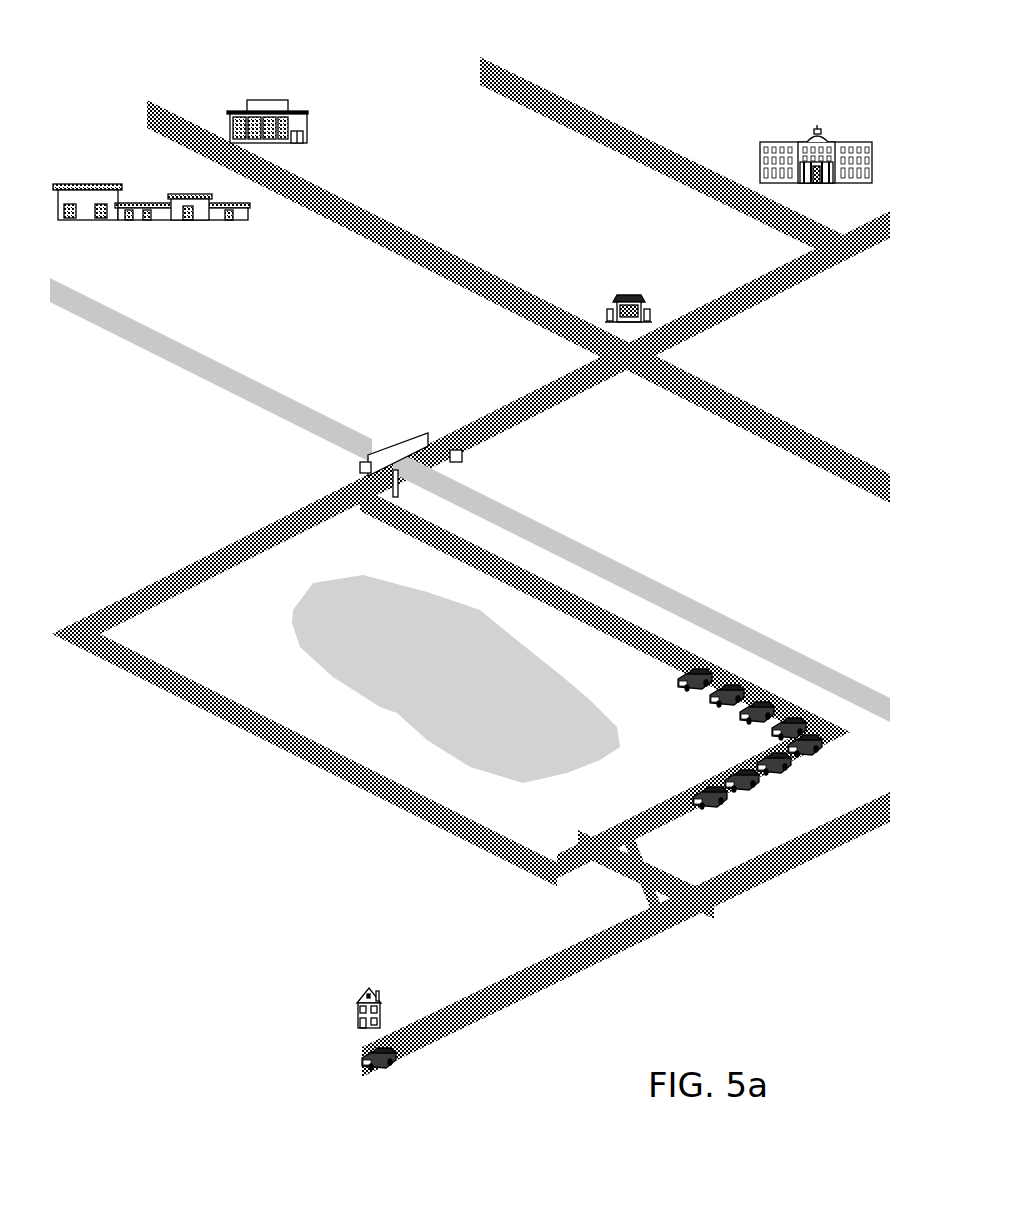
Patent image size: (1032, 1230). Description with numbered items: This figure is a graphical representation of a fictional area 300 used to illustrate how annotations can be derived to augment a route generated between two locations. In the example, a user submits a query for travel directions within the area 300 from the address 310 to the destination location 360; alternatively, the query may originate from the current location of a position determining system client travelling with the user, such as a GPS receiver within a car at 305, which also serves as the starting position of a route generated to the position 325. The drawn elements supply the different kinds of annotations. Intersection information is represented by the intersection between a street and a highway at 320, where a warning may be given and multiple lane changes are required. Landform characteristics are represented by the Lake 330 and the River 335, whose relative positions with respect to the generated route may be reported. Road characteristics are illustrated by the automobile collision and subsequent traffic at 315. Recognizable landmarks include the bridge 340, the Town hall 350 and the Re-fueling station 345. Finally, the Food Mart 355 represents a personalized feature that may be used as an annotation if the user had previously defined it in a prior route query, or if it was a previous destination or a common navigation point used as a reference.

The area 300 is at (708, 48).
The car 305 is at (355, 1052).
The address 310 is at (376, 990).
The automobile collision and subsequent traffic 315 is at (785, 790).
The intersection between a street and a highway 320 is at (679, 860).
The position 325 is at (322, 778).
The Lake 330 is at (316, 572).
The River 335 is at (603, 552).
The bridge 340 is at (405, 446).
The Re-fueling station 345 is at (643, 288).
The Town hall 350 is at (782, 128).
The Food Mart 355 is at (276, 100).
The destination location 360 is at (64, 183).